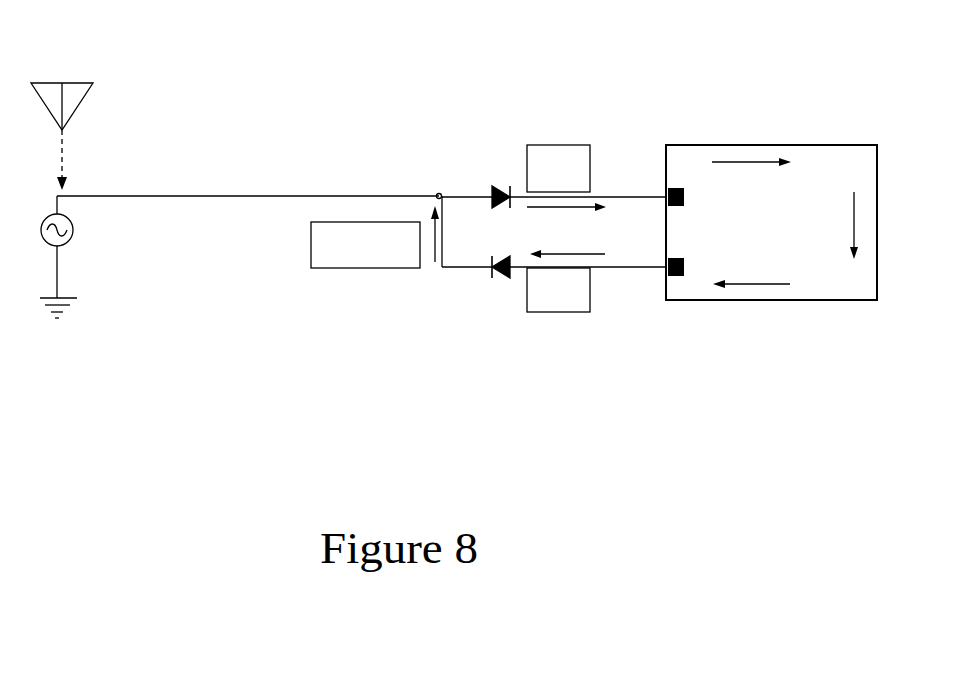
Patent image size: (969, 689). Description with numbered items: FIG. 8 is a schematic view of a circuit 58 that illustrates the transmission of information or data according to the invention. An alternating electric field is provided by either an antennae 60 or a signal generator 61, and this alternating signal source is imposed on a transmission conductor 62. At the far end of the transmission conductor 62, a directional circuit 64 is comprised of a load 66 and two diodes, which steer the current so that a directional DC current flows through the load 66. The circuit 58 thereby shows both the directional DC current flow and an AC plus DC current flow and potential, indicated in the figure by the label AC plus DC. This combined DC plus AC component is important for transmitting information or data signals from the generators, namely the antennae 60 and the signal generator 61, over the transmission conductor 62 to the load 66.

The circuit 58 is at (375, 95).
The antennae 60 is at (66, 157).
The signal generator 61 is at (58, 278).
The transmission conductor 62 is at (260, 197).
The directional circuit 64 is at (475, 267).
The load 66 is at (790, 300).